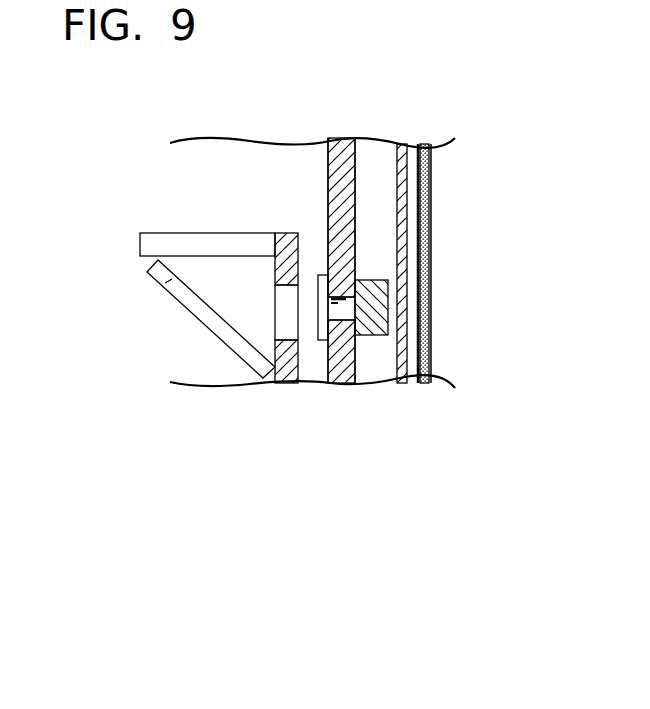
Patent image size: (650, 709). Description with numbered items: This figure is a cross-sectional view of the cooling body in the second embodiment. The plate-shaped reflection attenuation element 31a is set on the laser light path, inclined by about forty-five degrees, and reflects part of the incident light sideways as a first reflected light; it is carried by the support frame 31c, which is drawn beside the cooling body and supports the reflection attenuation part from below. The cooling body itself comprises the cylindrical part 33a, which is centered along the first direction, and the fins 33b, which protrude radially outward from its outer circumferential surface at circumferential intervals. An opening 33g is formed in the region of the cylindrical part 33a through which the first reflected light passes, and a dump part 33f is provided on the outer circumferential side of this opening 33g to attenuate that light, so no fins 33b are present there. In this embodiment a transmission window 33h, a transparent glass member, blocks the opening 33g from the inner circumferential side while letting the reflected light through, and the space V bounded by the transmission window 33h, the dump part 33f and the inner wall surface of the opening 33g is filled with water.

The reflection attenuation element 31a is at (165, 283).
The support frame 31c is at (288, 232).
The cylindrical part 33a is at (336, 136).
The fins 33b is at (383, 153).
The dump part 33f is at (383, 313).
The opening 33g is at (348, 300).
The transmission window 33h is at (324, 333).
The space V is at (342, 312).